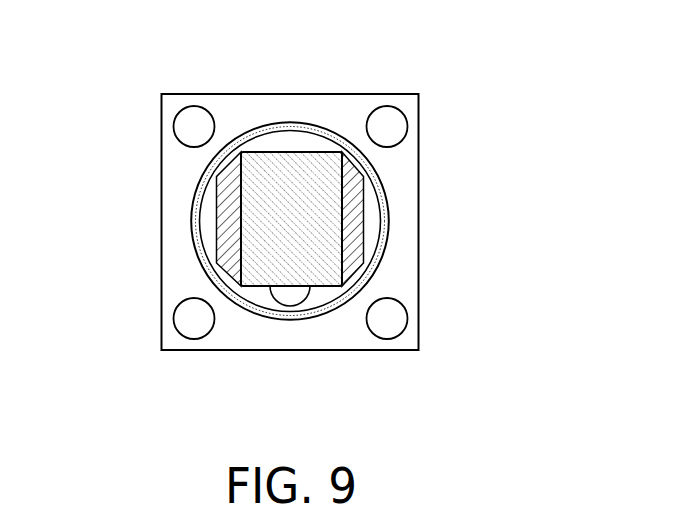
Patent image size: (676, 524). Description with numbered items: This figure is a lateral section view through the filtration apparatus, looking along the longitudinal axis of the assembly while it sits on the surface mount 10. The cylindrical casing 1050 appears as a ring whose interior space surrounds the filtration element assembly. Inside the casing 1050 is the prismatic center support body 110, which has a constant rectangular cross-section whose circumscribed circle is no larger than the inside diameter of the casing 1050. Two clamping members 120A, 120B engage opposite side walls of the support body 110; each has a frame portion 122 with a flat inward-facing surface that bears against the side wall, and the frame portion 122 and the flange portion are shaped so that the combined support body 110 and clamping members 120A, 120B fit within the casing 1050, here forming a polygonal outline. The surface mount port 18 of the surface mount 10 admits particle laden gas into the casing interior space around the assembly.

The surface mount 10 is at (162, 257).
The cylindrical casing 1050 is at (253, 128).
The prismatic center support body 110 is at (293, 157).
The clamping member 120A is at (216, 200).
The clamping member 120B is at (364, 213).
The frame portion 122 is at (216, 233).
The surface mount port 18 is at (311, 295).